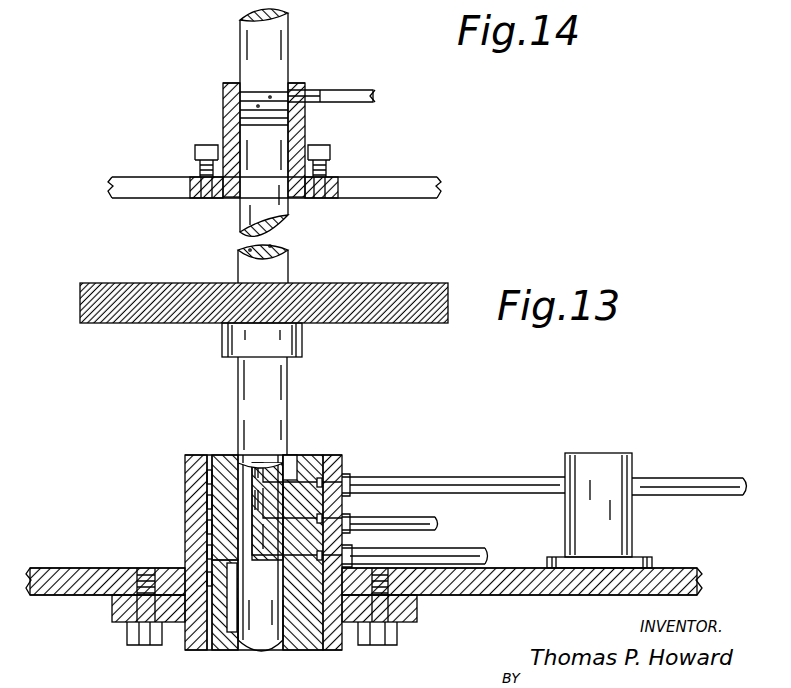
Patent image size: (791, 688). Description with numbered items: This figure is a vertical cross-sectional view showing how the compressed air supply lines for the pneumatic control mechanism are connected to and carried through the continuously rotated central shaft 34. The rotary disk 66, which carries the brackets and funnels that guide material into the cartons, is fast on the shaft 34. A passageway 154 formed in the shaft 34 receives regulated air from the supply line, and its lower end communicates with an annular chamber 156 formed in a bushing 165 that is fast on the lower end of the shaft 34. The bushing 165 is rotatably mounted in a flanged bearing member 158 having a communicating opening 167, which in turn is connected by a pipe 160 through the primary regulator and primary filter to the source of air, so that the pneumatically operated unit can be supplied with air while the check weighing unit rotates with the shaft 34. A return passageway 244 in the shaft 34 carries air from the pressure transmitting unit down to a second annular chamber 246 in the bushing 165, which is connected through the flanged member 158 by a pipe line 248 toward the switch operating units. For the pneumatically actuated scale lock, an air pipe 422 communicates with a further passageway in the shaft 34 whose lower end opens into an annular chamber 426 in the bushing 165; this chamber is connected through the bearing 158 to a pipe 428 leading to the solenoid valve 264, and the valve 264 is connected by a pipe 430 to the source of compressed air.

In FIG. 14, the central shaft 34 is at (290, 55).
In FIG. 13, the central shaft 34 is at (289, 387).
In FIG. 14, the rotary disk 66 is at (150, 180).
In FIG. 14, the air pipe 422 is at (353, 91).
In FIG. 13, the passageway 154 is at (212, 457).
In FIG. 13, the annular chamber 156 is at (185, 558).
In FIG. 13, the flanged bearing member 158 is at (333, 457).
In FIG. 13, the pipe 160 is at (467, 548).
In FIG. 13, the bushing 165 is at (293, 457).
In FIG. 13, the communicating opening 167 is at (344, 548).
In FIG. 13, the return passageway 244 is at (263, 463).
In FIG. 13, the second annular chamber 246 is at (185, 520).
In FIG. 13, the pipe line 248 is at (436, 520).
In FIG. 13, the solenoid valve 264 is at (603, 453).
In FIG. 13, the annular chamber 426 is at (185, 480).
In FIG. 13, the pipe 428 is at (412, 476).
In FIG. 13, the pipe 430 is at (687, 478).